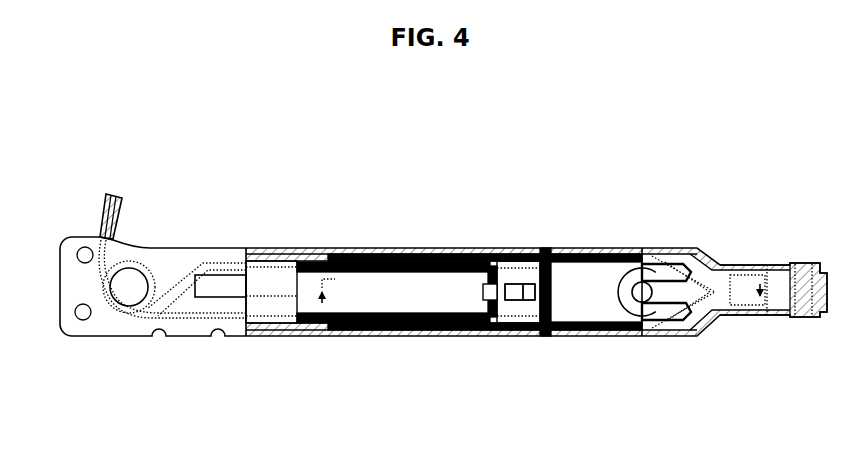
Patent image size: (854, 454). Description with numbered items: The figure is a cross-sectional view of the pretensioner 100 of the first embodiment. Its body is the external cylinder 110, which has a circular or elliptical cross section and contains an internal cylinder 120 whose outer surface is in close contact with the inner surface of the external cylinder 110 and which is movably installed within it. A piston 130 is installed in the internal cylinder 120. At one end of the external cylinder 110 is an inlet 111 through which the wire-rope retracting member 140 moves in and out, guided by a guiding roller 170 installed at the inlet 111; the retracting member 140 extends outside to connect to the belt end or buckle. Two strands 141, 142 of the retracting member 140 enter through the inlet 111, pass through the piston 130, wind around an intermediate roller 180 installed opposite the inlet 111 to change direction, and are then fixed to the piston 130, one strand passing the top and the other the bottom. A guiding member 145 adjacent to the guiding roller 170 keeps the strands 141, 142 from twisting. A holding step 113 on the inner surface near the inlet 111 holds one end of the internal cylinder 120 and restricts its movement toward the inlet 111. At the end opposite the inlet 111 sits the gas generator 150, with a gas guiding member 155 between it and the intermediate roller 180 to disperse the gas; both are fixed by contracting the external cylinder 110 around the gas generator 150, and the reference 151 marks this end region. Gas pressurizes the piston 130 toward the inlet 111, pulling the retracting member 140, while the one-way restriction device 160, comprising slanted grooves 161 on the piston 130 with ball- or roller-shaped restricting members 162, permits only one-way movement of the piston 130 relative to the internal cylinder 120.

The pretensioner 100 is at (560, 190).
The external cylinder 110 is at (383, 247).
The inlet 111 is at (238, 260).
The holding step 113 is at (341, 328).
The internal cylinder 120 is at (441, 253).
The piston 130 is at (525, 275).
The retracting member 140 is at (103, 207).
The one strand 141 is at (334, 256).
The other strand 142 is at (408, 325).
The guiding member 145 is at (278, 305).
The gas generator 150 is at (772, 264).
The first seal 151 is at (512, 302).
The gas guiding member 155 is at (712, 262).
The one-way restriction device 160 is at (548, 386).
The slanted groove 161 is at (490, 291).
The restricting member 162 is at (530, 302).
The guiding roller 170 is at (137, 266).
The intermediate roller 180 is at (632, 257).